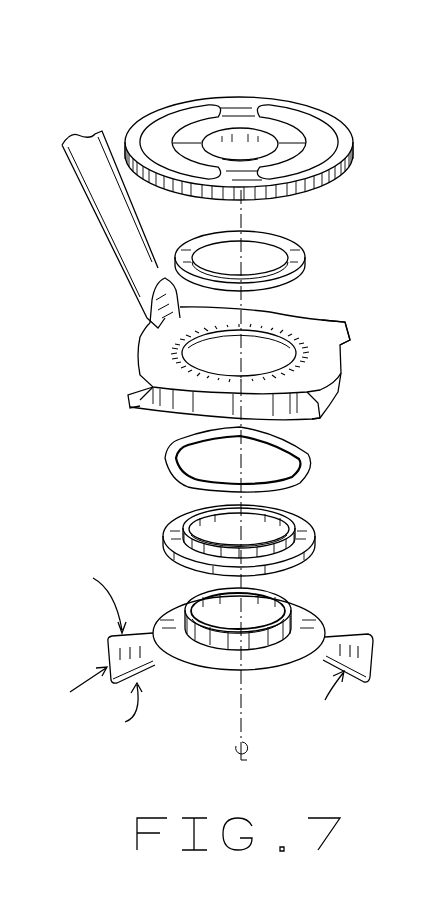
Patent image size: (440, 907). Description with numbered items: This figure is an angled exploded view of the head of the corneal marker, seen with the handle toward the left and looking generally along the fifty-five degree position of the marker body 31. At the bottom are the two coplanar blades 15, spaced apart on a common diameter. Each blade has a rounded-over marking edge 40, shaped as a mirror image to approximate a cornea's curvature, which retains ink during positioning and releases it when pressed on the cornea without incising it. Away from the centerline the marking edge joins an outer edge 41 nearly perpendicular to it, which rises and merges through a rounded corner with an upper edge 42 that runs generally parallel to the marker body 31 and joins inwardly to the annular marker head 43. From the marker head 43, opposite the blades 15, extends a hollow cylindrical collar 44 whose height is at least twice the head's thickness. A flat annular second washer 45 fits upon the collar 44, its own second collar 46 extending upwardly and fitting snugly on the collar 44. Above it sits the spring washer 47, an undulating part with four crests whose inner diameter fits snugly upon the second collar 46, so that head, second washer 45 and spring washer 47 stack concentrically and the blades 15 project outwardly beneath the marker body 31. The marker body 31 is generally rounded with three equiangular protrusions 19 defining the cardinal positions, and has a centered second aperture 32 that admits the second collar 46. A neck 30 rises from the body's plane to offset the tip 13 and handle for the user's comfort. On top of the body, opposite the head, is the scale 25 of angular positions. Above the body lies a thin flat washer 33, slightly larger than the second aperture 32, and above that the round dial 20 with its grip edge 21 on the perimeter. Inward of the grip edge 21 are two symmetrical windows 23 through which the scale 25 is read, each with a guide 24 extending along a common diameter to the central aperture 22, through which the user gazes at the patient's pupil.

The tip 13 is at (82, 165).
The blades 15 is at (112, 655).
The protrusions 19 is at (350, 333).
The dial 20 is at (271, 115).
The grip edge 21 is at (348, 172).
The aperture 22 is at (241, 137).
The windows 23 is at (323, 147).
The guide 24 is at (292, 142).
The scale 25 is at (241, 351).
The neck 30 is at (165, 302).
The marker body 31 is at (333, 383).
The second aperture 32 is at (210, 357).
The washer 33 is at (297, 246).
The marking edge 40 is at (223, 703).
The outer edge 41 is at (76, 687).
The upper edge 42 is at (97, 598).
The marker head 43 is at (233, 649).
The collar 44 is at (290, 612).
The second washer 45 is at (269, 537).
The second collar 46 is at (297, 522).
The spring washer 47 is at (312, 463).